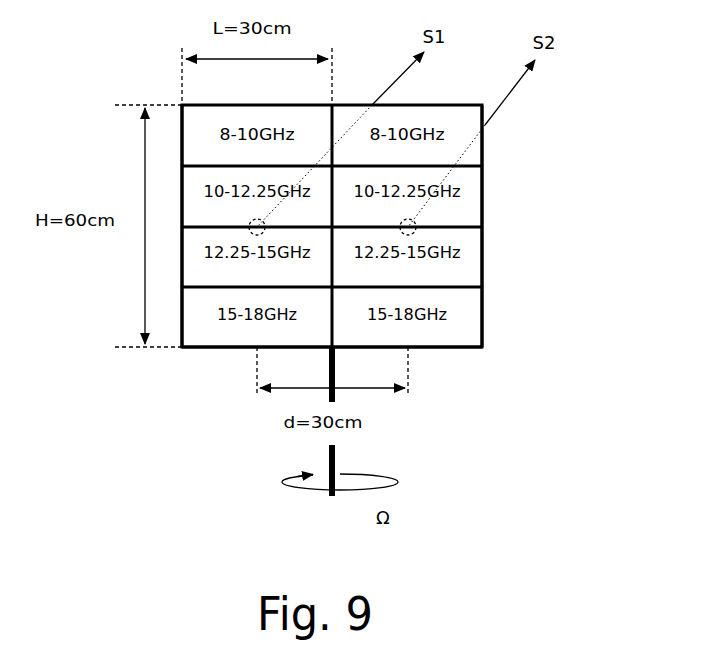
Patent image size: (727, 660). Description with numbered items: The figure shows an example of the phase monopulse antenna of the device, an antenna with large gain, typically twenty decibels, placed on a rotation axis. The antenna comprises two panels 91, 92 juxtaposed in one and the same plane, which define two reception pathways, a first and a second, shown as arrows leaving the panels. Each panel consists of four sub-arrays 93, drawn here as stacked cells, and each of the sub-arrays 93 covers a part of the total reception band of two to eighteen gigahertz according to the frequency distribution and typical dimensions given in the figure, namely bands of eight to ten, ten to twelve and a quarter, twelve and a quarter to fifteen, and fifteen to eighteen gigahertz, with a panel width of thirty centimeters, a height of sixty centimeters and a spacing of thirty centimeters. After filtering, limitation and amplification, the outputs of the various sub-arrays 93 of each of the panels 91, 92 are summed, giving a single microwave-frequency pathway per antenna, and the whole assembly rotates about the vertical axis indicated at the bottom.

The panel 91 is at (212, 400).
The panel 92 is at (464, 400).
The sub-array 93 is at (323, 215).